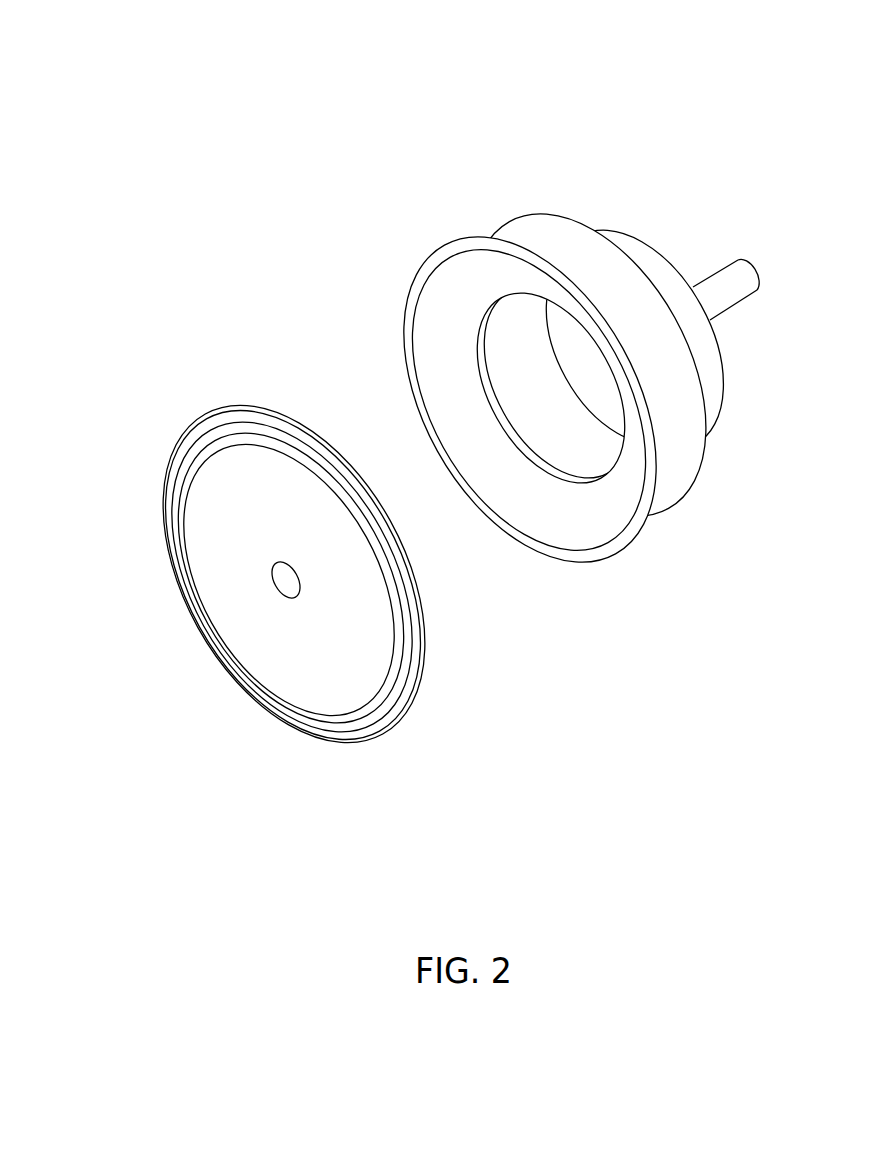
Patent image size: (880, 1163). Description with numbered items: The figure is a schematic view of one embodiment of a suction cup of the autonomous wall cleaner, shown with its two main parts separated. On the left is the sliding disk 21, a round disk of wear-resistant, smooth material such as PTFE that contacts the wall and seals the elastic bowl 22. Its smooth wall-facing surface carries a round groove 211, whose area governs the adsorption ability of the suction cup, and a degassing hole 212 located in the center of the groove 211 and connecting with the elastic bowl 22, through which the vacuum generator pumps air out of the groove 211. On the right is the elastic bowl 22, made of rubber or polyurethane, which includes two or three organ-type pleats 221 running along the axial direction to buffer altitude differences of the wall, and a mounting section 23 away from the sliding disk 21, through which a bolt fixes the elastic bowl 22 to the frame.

The sliding disk 21 is at (203, 415).
The groove 211 is at (215, 588).
The degassing hole 212 is at (290, 588).
The elastic bowl 22 is at (515, 304).
The pleats 221 is at (527, 227).
The mounting section 23 is at (722, 267).